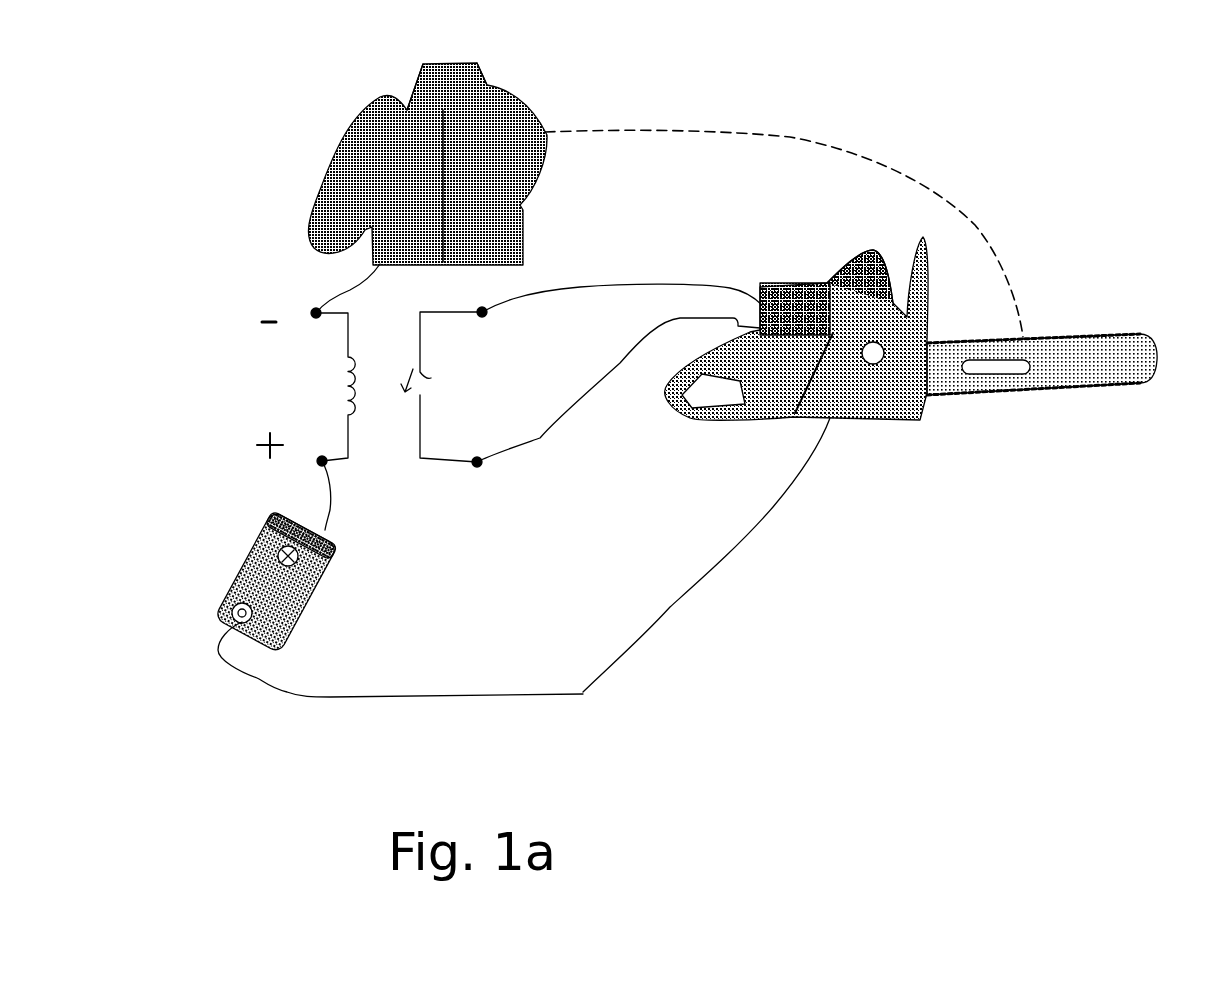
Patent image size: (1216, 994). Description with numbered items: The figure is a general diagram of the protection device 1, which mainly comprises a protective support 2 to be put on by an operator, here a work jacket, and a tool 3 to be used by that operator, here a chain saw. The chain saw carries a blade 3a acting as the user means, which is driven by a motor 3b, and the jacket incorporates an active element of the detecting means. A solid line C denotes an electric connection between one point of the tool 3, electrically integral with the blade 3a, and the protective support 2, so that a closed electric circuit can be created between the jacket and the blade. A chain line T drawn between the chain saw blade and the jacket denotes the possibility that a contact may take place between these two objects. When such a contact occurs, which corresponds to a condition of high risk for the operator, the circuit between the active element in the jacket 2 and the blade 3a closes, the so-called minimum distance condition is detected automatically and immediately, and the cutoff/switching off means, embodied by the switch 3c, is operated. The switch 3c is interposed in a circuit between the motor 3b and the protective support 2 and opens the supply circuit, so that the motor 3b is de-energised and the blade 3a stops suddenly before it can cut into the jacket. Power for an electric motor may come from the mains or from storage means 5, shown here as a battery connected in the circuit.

The protection device 1 is at (781, 606).
The protective support 2 is at (318, 120).
The tool 3 is at (833, 440).
The blade 3a is at (1113, 385).
The motor 3b is at (837, 303).
The switch 3c is at (437, 379).
The storage means 5 is at (210, 535).
The chain line T is at (648, 130).
The electric connection C is at (587, 687).